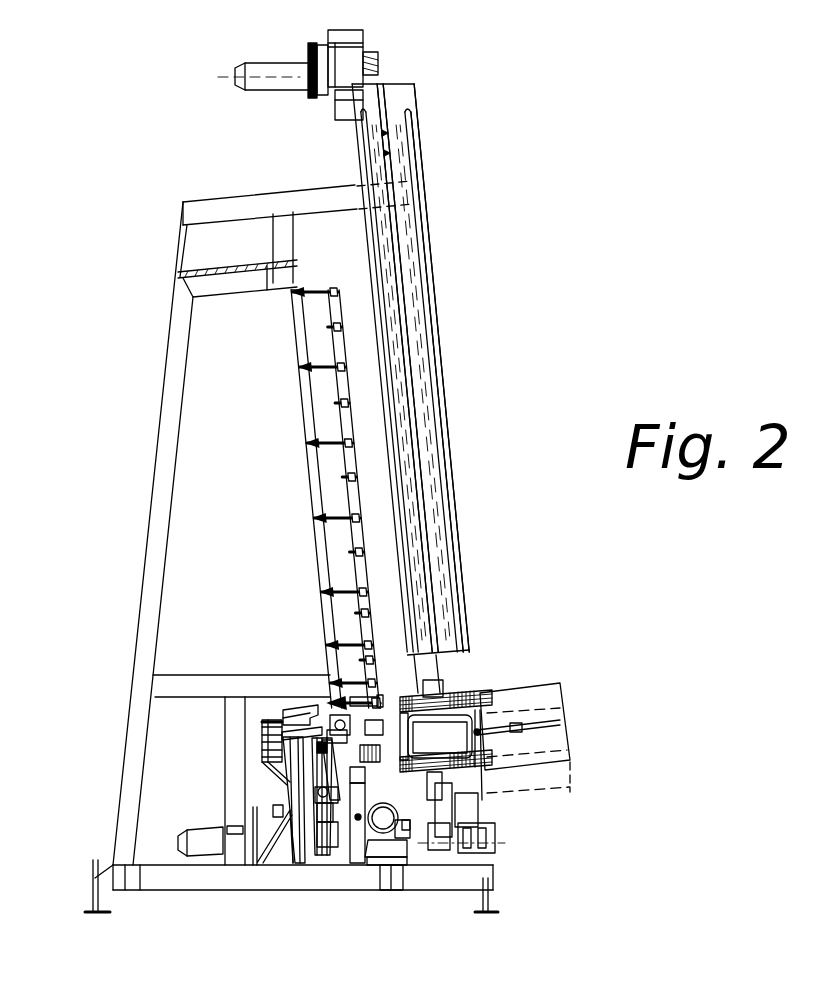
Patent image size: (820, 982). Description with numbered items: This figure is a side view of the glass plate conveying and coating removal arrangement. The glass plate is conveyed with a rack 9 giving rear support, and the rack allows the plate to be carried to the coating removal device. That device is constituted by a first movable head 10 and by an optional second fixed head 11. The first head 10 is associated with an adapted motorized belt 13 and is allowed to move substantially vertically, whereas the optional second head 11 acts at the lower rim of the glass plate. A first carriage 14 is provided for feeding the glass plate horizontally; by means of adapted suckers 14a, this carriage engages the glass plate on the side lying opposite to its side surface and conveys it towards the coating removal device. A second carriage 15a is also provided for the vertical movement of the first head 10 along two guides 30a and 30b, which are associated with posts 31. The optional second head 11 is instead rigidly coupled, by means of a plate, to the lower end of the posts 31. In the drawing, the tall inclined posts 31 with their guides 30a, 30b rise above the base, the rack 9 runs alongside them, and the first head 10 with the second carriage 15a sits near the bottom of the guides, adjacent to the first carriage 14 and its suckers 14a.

The rack 9 is at (333, 462).
The first movable head 10 is at (502, 675).
The second fixed head 11 is at (577, 792).
The motorized belt 13 is at (396, 300).
The first carriage 14 is at (347, 703).
The suckers 14a is at (383, 717).
The second carriage 15a is at (462, 677).
The guide 30a is at (453, 505).
The guide 30b is at (418, 441).
The posts 31 is at (397, 138).